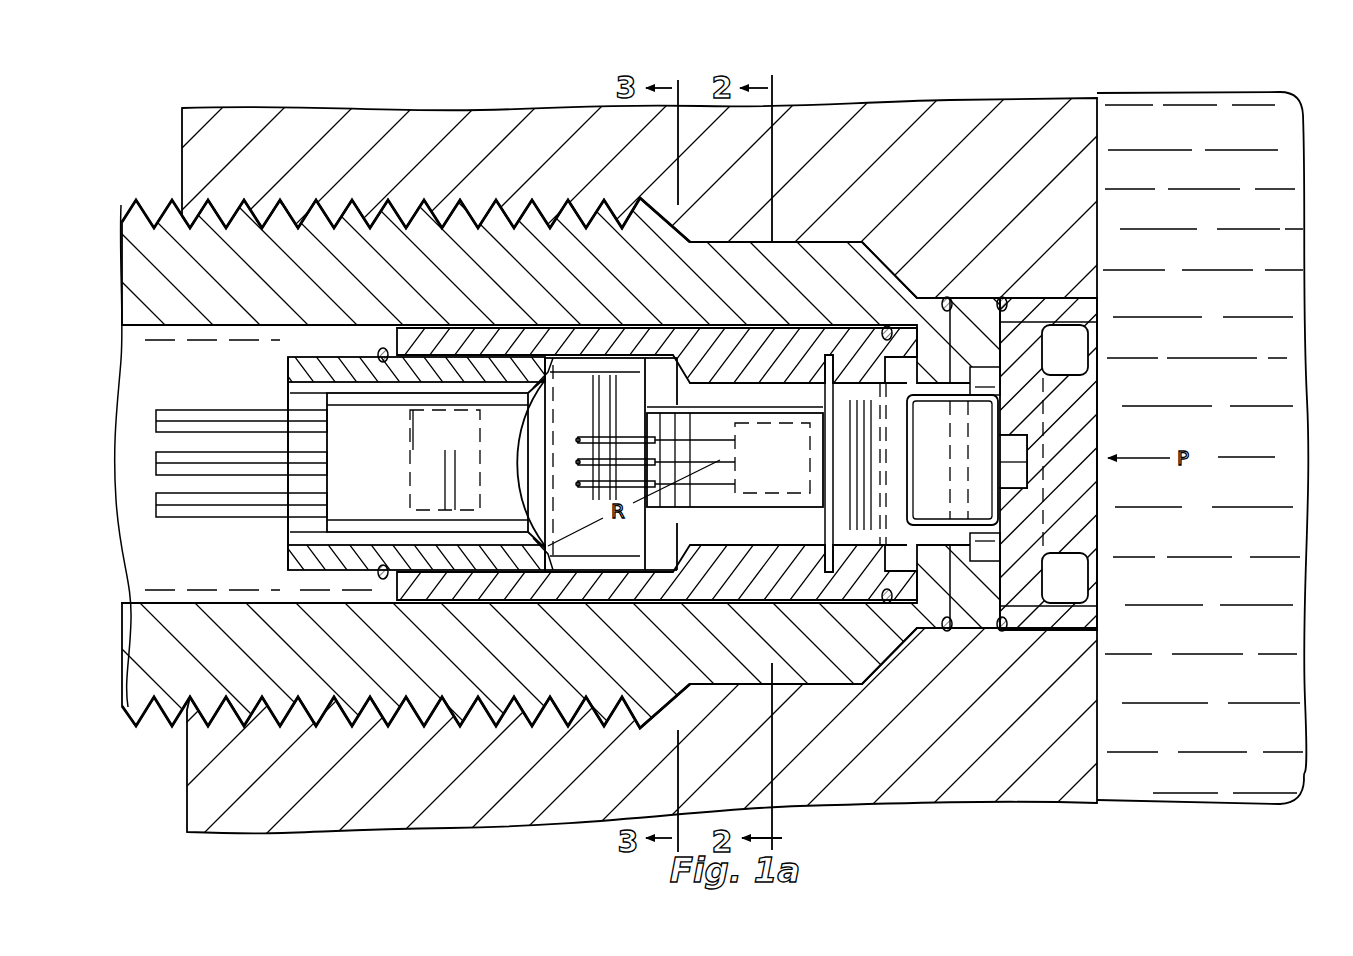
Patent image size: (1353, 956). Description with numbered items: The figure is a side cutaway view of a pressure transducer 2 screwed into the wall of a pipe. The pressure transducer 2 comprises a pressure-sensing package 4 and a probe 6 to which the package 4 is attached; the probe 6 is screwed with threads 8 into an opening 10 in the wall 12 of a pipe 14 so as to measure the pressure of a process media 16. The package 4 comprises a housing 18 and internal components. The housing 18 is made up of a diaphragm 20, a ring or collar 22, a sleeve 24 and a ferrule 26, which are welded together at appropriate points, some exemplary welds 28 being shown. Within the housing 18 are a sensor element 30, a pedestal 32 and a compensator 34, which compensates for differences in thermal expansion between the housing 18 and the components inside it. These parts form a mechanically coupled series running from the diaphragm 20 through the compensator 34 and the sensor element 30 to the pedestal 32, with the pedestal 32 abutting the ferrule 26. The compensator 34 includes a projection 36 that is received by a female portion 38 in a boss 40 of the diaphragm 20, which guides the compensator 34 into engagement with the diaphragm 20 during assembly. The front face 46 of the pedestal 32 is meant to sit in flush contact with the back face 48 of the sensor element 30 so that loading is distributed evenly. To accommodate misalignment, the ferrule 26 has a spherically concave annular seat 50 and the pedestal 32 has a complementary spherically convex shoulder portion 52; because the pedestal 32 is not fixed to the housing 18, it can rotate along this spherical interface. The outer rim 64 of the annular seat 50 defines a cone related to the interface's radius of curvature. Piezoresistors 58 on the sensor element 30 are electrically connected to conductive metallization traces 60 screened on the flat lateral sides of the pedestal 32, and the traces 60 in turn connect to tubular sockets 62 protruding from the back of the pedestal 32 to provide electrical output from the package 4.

The pressure transducer 2 is at (118, 200).
The pressure-sensing package 4 is at (266, 366).
The probe 6 is at (150, 286).
The threads 8 is at (198, 722).
The opening 10 is at (193, 706).
The wall 12 is at (433, 797).
The pipe 14 is at (178, 148).
The process media 16 is at (1247, 500).
The housing 18 is at (350, 574).
The diaphragm 20 is at (1100, 365).
The ring (or collar) 22 is at (973, 562).
The sleeve 24 is at (822, 590).
The ferrule 26 is at (288, 560).
The welds 28 is at (380, 352).
The sensor element 30 is at (800, 404).
The pedestal 32 is at (575, 356).
The compensator 34 is at (935, 528).
The projection 36 is at (1027, 446).
The female portion 38 is at (1027, 482).
The boss 40 is at (1077, 566).
The front face 46 is at (650, 540).
The back face 48 is at (648, 414).
The spherically concave annular seat 50 is at (546, 376).
The spherically convex shoulder portion 52 is at (545, 366).
The piezoresistors 58 is at (778, 416).
The conductive metallization traces 60 is at (582, 485).
The tubular sockets 62 is at (156, 505).
The outer rim 64 is at (548, 550).